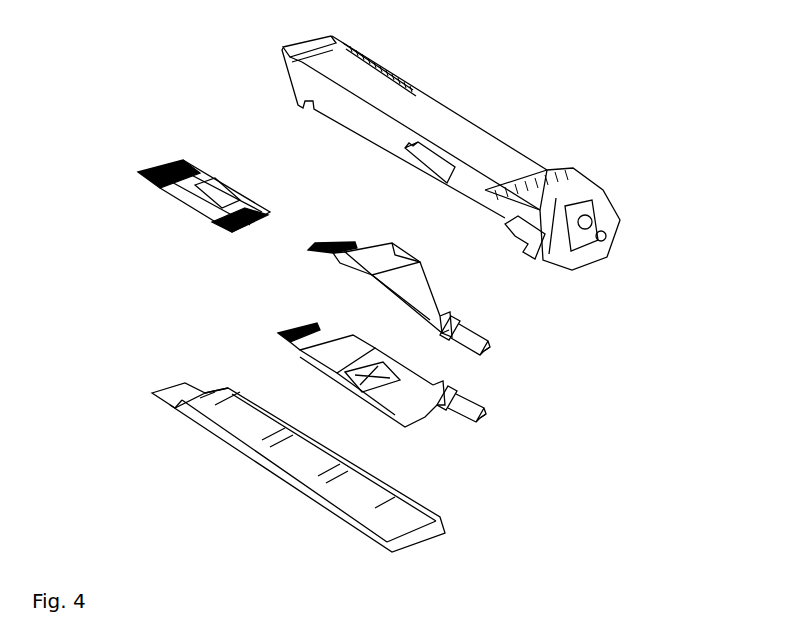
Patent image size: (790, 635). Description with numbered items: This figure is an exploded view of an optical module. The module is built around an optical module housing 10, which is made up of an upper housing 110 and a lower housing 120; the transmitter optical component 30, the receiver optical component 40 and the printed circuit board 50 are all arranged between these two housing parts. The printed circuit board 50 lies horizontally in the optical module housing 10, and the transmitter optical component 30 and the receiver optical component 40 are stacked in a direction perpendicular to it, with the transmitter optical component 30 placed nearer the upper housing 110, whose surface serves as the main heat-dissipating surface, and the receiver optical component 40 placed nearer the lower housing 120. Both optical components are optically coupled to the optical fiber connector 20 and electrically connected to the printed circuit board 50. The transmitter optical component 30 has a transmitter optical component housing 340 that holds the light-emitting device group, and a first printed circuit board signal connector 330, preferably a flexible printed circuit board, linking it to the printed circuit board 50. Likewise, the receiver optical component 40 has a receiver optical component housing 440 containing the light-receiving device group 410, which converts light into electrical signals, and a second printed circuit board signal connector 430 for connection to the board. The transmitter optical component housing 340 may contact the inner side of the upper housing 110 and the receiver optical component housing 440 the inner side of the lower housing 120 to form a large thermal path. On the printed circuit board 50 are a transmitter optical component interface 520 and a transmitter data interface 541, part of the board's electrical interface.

The optical module housing 10 is at (459, 294).
The upper housing 110 is at (538, 205).
The lower housing 120 is at (443, 527).
The optical fiber connector 20 is at (495, 343).
The transmitter optical component 30 is at (399, 269).
The first printed circuit board signal connector 330 is at (333, 245).
The transmitter optical component housing 340 is at (447, 297).
The receiver optical component 40 is at (348, 381).
The second printed circuit board signal connector 430 is at (300, 330).
The light-receiving device group 410 is at (357, 375).
The receiver optical component housing 440 is at (382, 402).
The printed circuit board 50 is at (163, 172).
The transmitter optical component interface 520 is at (160, 175).
The transmitter data interface 541 is at (217, 228).